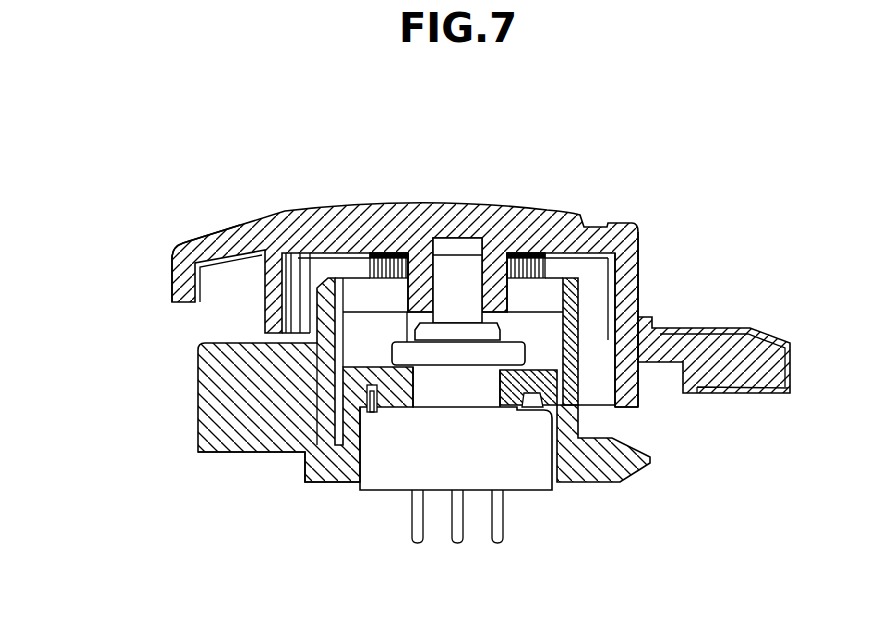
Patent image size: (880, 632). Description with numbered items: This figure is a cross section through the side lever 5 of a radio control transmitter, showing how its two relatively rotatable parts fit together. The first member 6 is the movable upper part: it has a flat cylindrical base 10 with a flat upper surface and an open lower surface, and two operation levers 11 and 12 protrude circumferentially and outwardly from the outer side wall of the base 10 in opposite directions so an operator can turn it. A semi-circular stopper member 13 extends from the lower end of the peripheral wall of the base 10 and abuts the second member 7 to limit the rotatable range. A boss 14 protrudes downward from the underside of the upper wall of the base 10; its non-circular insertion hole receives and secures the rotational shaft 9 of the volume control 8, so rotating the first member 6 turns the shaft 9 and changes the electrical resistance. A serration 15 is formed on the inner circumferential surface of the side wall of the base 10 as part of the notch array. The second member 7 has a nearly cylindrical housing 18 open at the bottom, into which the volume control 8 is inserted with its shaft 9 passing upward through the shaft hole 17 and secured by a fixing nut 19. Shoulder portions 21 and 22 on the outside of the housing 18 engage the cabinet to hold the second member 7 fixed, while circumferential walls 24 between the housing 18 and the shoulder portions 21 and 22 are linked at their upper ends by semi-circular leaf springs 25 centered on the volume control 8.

The side lever 5 is at (620, 154).
The first member 6 is at (291, 209).
The second member 7 is at (310, 483).
The volume control 8 is at (513, 477).
The rotational shaft 9 is at (452, 283).
The flat cylindrical base 10 is at (567, 287).
The operation lever 11 is at (183, 251).
The operation lever 12 is at (768, 363).
The semi-circular stopper member 13 is at (627, 410).
The boss 14 is at (497, 293).
The serration 15 is at (530, 243).
The shaft hole 17 is at (428, 400).
The housing 18 is at (537, 383).
The fixing nut 19 is at (517, 352).
The shoulder portion 21 is at (197, 445).
The shoulder portion 22 is at (650, 463).
The circumferential wall 24 is at (610, 257).
The semi-circular leaf spring 25 is at (357, 298).